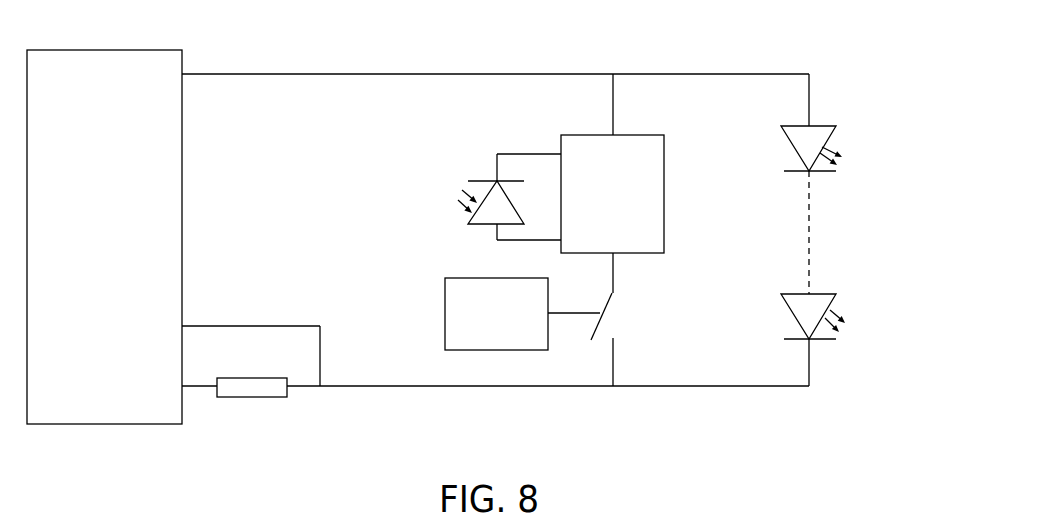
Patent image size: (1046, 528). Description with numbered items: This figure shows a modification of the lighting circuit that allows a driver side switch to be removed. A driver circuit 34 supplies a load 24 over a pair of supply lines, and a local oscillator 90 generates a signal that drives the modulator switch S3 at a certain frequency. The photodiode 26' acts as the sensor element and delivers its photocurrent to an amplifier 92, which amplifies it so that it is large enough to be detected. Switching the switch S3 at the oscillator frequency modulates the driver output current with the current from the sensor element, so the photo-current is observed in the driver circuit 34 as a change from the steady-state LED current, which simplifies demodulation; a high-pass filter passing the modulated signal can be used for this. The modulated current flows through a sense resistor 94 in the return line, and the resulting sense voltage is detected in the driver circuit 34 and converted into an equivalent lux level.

The light source (LED string) 24 is at (832, 60).
The driver circuit 34 is at (182, 240).
The photodiode 26' is at (462, 197).
The amplifier 92 is at (666, 201).
The local oscillator 90 is at (445, 332).
The sense resistor 94 is at (257, 393).
The switch S3 is at (623, 316).